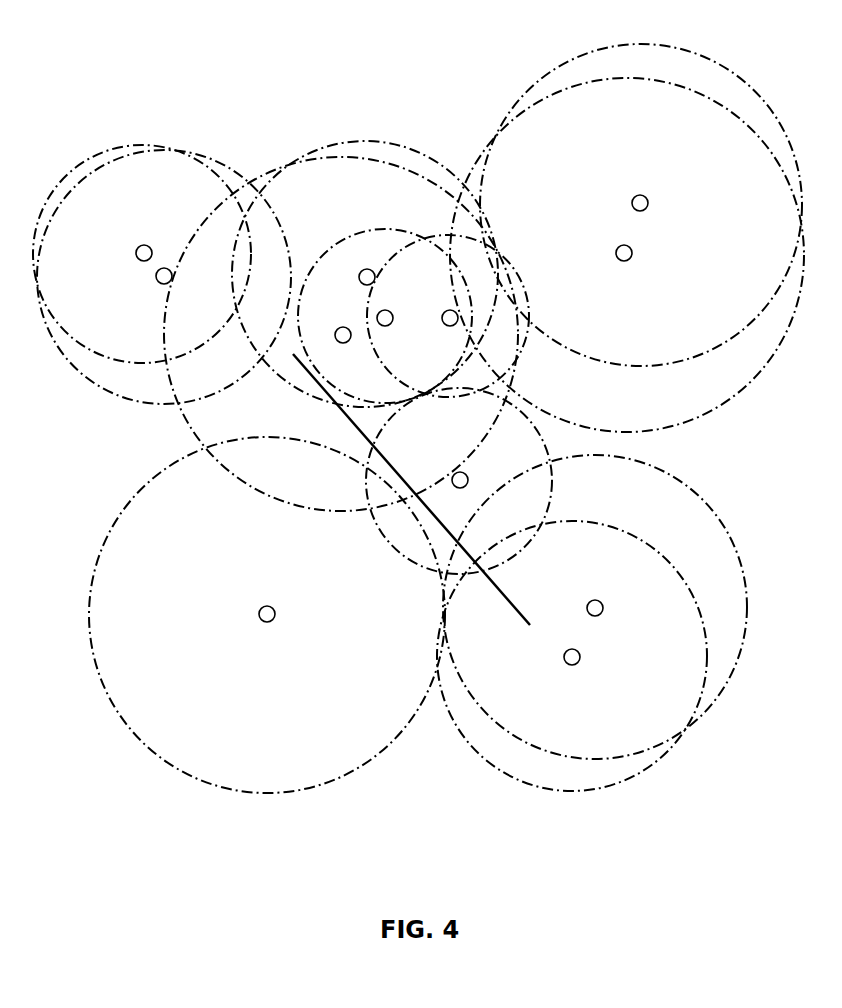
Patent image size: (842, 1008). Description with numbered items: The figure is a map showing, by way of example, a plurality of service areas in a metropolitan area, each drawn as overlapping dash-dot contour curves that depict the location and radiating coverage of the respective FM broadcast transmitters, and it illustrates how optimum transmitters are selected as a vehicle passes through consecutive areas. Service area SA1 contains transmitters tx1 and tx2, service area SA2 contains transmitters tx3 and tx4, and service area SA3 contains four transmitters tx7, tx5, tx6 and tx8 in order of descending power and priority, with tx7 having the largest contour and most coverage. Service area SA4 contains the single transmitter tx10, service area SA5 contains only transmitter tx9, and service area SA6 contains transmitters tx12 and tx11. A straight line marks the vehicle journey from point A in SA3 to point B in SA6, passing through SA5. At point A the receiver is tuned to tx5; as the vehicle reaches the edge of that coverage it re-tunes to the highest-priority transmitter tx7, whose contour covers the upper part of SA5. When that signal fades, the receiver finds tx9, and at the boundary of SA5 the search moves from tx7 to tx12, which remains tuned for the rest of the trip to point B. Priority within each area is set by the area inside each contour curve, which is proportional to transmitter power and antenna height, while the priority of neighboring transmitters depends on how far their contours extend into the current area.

The service area 1 SA1 is at (162, 274).
The service area 2 SA2 is at (627, 238).
The service area 3 SA3 is at (346, 326).
The service area 4 SA4 is at (267, 615).
The service area 5 SA5 is at (459, 481).
The service area 6 SA6 is at (592, 623).
The transmitter tx 1 tx1 is at (125, 251).
The transmitter tx 2 tx2 is at (147, 280).
The transmitter tx 3 tx3 is at (662, 203).
The transmitter tx 4 tx4 is at (646, 253).
The transmitter tx 5 tx5 is at (387, 278).
The transmitter tx 6 tx6 is at (438, 308).
The transmitter tx 7 tx7 is at (348, 349).
The transmitter tx 8 tx8 is at (398, 330).
The transmitter tx 9 tx9 is at (453, 494).
The transmitter tx 10 tx10 is at (293, 615).
The transmitter tx 11 tx11 is at (599, 656).
The transmitter tx 12 tx12 is at (622, 608).
The point A is at (404, 479).
The point B is at (544, 626).